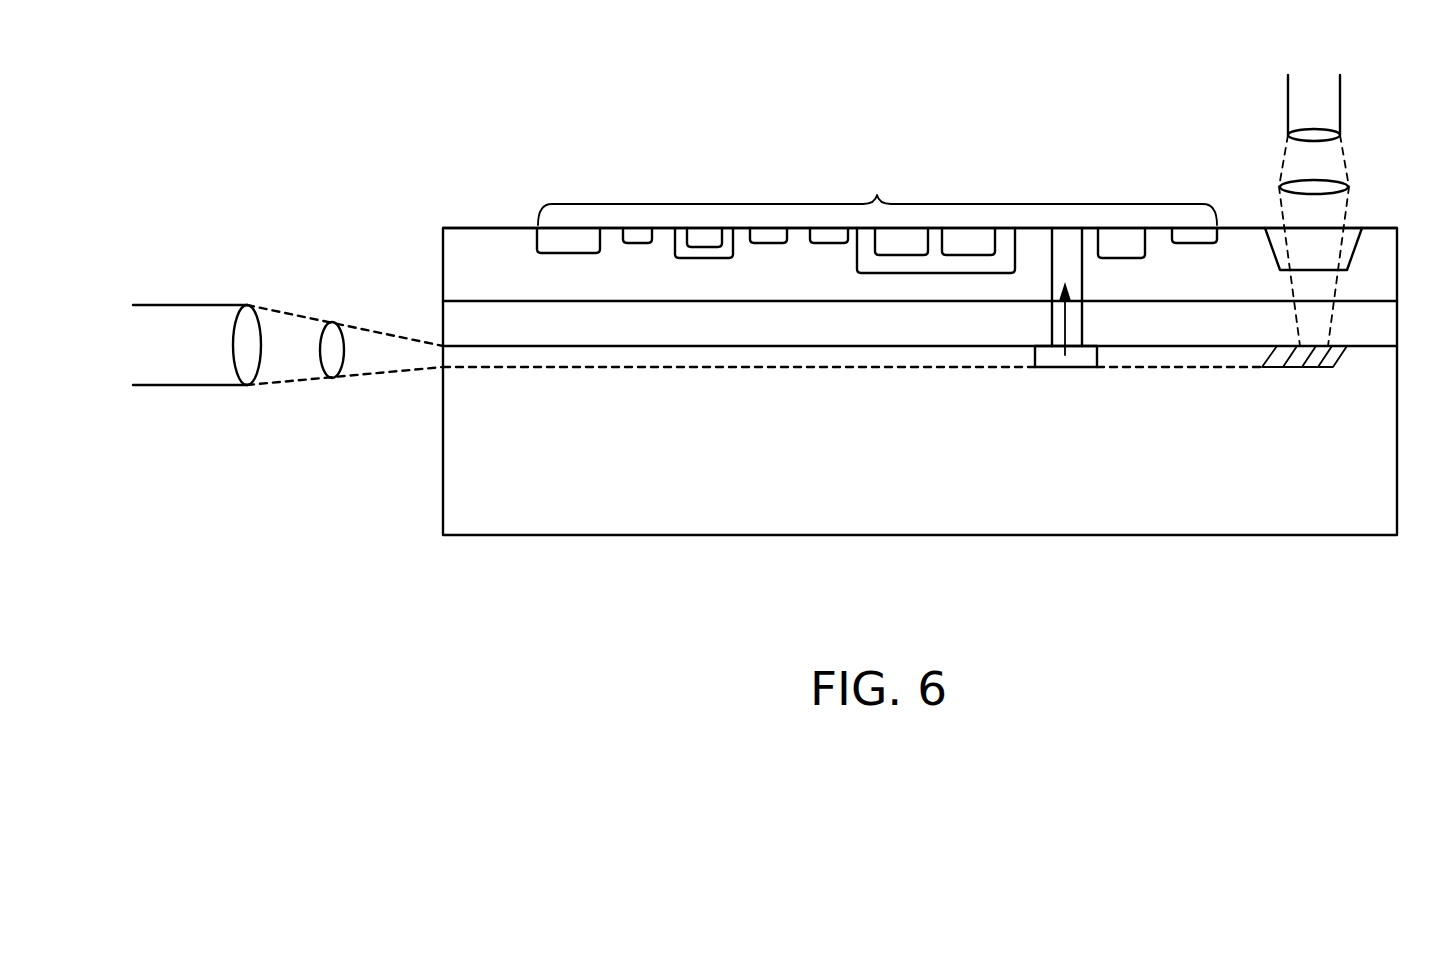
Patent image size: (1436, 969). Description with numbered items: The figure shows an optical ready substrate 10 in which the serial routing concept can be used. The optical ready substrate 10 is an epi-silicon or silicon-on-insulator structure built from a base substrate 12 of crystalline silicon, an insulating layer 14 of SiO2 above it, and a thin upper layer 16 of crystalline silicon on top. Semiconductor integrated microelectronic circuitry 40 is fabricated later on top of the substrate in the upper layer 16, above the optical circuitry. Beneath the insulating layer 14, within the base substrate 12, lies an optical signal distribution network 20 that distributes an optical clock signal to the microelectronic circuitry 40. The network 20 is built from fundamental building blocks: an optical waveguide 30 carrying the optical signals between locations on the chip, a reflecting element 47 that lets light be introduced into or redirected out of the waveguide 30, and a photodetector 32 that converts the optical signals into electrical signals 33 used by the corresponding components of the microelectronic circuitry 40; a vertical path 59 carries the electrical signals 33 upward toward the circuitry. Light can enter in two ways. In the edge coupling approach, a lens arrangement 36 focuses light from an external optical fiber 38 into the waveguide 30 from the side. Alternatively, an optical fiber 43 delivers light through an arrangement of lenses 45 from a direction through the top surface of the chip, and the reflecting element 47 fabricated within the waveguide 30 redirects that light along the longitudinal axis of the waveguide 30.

The optical ready substrate 10 is at (446, 595).
The base substrate 12 is at (453, 487).
The insulating layer 14 is at (450, 322).
The thin upper layer 16 is at (488, 235).
The optical signal distribution network 20 is at (761, 429).
The optical waveguide 30 is at (538, 364).
The photodetector 32 is at (1055, 357).
The electrical signals 33 is at (1070, 320).
The lens arrangement 36 is at (330, 338).
The external optical fiber 38 is at (178, 313).
The microelectronic circuitry 40 is at (877, 195).
The optical fiber 43 is at (1328, 112).
The lenses 45 is at (1347, 187).
The reflecting element 47 is at (1291, 376).
The vertical waveguide 59 is at (1063, 240).